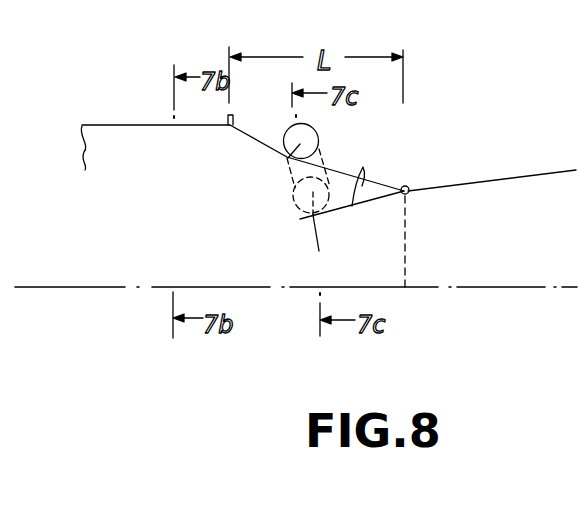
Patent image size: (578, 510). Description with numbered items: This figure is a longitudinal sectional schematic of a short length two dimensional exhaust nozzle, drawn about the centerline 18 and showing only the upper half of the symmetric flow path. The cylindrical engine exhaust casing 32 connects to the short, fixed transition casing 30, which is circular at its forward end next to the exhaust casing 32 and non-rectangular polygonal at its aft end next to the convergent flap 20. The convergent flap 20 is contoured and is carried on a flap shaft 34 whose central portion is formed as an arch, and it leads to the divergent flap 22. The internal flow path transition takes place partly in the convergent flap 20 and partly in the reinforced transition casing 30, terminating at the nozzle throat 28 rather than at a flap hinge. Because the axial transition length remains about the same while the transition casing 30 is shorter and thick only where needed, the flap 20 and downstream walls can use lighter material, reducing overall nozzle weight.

The centerline 18 is at (514, 287).
The convergent flap 20 is at (352, 181).
The divergent flap 22 is at (515, 178).
The nozzle throat 28 is at (405, 237).
The transition casing 30 is at (252, 137).
The cylindrical engine exhaust casing 32 is at (159, 99).
The flap shaft 34 is at (293, 187).